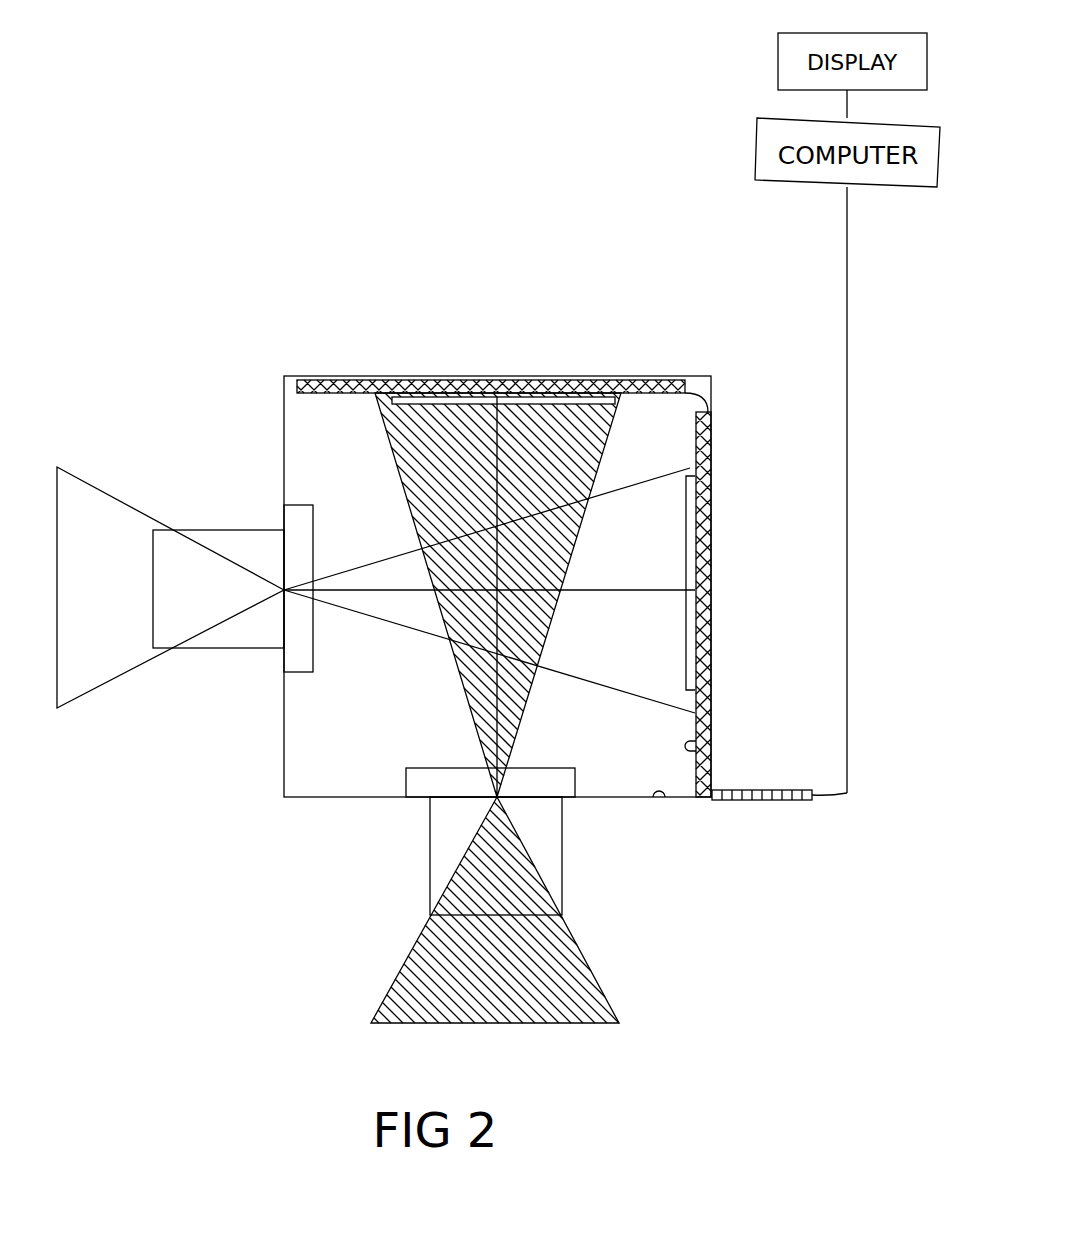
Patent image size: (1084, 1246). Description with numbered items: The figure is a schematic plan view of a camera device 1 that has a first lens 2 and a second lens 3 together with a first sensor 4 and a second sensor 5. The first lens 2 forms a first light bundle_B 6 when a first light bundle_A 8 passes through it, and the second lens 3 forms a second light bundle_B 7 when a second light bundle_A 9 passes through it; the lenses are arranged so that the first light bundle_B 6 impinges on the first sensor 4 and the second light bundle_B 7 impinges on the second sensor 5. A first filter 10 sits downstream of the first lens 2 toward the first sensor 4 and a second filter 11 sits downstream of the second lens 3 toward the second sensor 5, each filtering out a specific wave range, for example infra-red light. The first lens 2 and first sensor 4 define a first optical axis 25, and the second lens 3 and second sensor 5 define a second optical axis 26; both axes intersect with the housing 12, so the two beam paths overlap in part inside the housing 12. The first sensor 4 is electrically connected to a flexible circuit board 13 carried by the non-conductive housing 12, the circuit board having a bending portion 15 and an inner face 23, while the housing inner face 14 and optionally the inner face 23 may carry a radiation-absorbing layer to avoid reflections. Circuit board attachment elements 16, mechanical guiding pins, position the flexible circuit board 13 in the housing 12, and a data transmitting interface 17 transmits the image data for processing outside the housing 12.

The camera device 1 is at (576, 96).
The first lens 2 is at (225, 530).
The second lens 3 is at (548, 850).
The first sensor 4 is at (689, 580).
The second sensor 5 is at (465, 400).
The first light bundle_B 6 is at (650, 541).
The second light bundle_B 7 is at (428, 468).
The first light bundle_A 8 is at (131, 655).
The second light bundle_A 9 is at (565, 975).
The first filter 10 is at (303, 655).
The second filter 11 is at (416, 790).
The housing 12 is at (284, 380).
The flexible circuit board 13 is at (568, 386).
The housing inner face 14 is at (657, 799).
The bending portion 15 is at (712, 386).
The circuit board attachment elements 16 is at (407, 386).
The data transmitting interface 17 is at (748, 799).
The inner face 23 is at (697, 752).
The first optical axis 25 is at (418, 592).
The second optical axis 26 is at (496, 620).